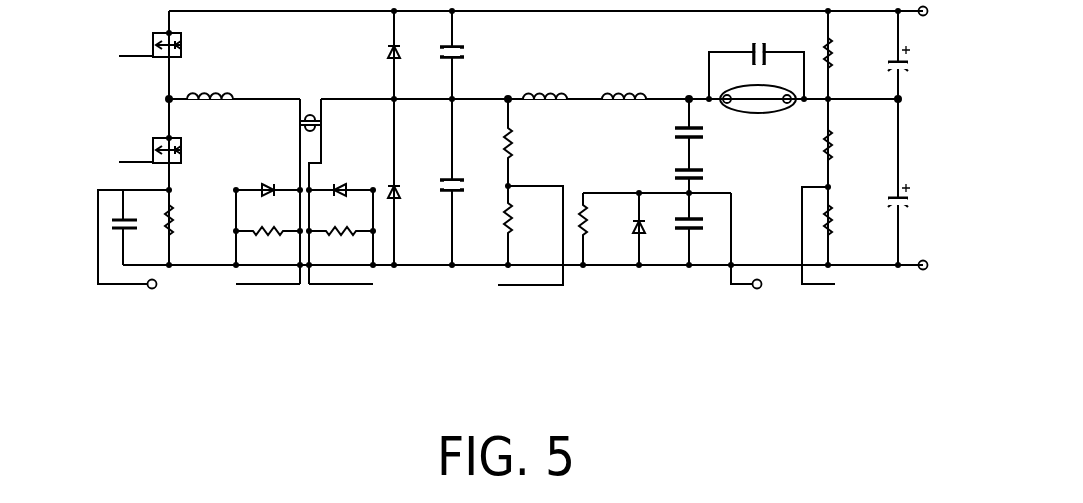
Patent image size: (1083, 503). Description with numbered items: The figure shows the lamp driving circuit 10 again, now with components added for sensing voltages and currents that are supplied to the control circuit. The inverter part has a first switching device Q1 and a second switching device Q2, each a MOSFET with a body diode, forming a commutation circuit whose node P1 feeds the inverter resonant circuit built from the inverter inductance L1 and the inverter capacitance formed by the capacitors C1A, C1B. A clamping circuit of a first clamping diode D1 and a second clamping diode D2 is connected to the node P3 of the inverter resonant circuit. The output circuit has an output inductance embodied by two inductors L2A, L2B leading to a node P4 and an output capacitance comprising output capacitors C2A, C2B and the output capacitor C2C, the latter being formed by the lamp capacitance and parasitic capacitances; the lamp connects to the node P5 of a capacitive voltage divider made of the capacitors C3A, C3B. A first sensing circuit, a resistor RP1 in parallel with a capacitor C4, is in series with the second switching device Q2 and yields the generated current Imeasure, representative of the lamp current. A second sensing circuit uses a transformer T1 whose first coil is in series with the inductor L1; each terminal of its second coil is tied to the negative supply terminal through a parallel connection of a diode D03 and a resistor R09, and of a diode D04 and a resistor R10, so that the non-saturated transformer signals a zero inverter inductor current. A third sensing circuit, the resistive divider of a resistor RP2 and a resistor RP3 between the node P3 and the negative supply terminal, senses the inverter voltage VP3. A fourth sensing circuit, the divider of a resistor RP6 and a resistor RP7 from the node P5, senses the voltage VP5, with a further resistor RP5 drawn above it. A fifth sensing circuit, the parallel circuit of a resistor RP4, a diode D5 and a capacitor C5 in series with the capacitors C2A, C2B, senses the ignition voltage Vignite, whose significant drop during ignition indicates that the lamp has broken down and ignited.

The first switching device Q1 is at (171, 48).
The second switching device Q2 is at (171, 149).
The inverter inductance L1 is at (210, 82).
The node of the commutation circuit P1 is at (183, 112).
The transformer T1 is at (325, 191).
The capacitor C4 is at (135, 226).
The resistor RP1 is at (192, 211).
The generated current Imeasure is at (151, 255).
The diode D03 is at (268, 211).
The diode D04 is at (341, 211).
The resistor R09 is at (268, 220).
The resistor R10 is at (341, 220).
The first clamping diode D1 is at (376, 55).
The second clamping diode D2 is at (410, 200).
The capacitor C1A is at (477, 55).
The capacitor C1B is at (470, 171).
The node of the inverter resonant circuit P3 is at (484, 113).
The resistor RP2 is at (532, 142).
The resistor RP3 is at (532, 225).
The inverter voltage VP3 is at (530, 253).
The output inductor L2A is at (545, 82).
The output inductor L2B is at (624, 82).
The node P4 is at (674, 112).
The output capacitor C2A is at (712, 134).
The output capacitor C2B is at (712, 176).
The capacitor C5 is at (701, 229).
The resistor RP4 is at (655, 229).
The diode D5 is at (654, 229).
The ignition voltage Vignite is at (744, 256).
The output capacitor C2C is at (756, 63).
The resistor RP5 is at (852, 53).
The resistor RP6 is at (852, 145).
The resistor RP7 is at (852, 220).
The voltage at node P5 VP5 is at (819, 253).
The node of the capacitive voltage divider P5 is at (884, 113).
The voltage divider capacitor C3A is at (918, 72).
The voltage divider capacitor C3B is at (918, 208).
The lamp driving circuit 10 is at (428, 333).